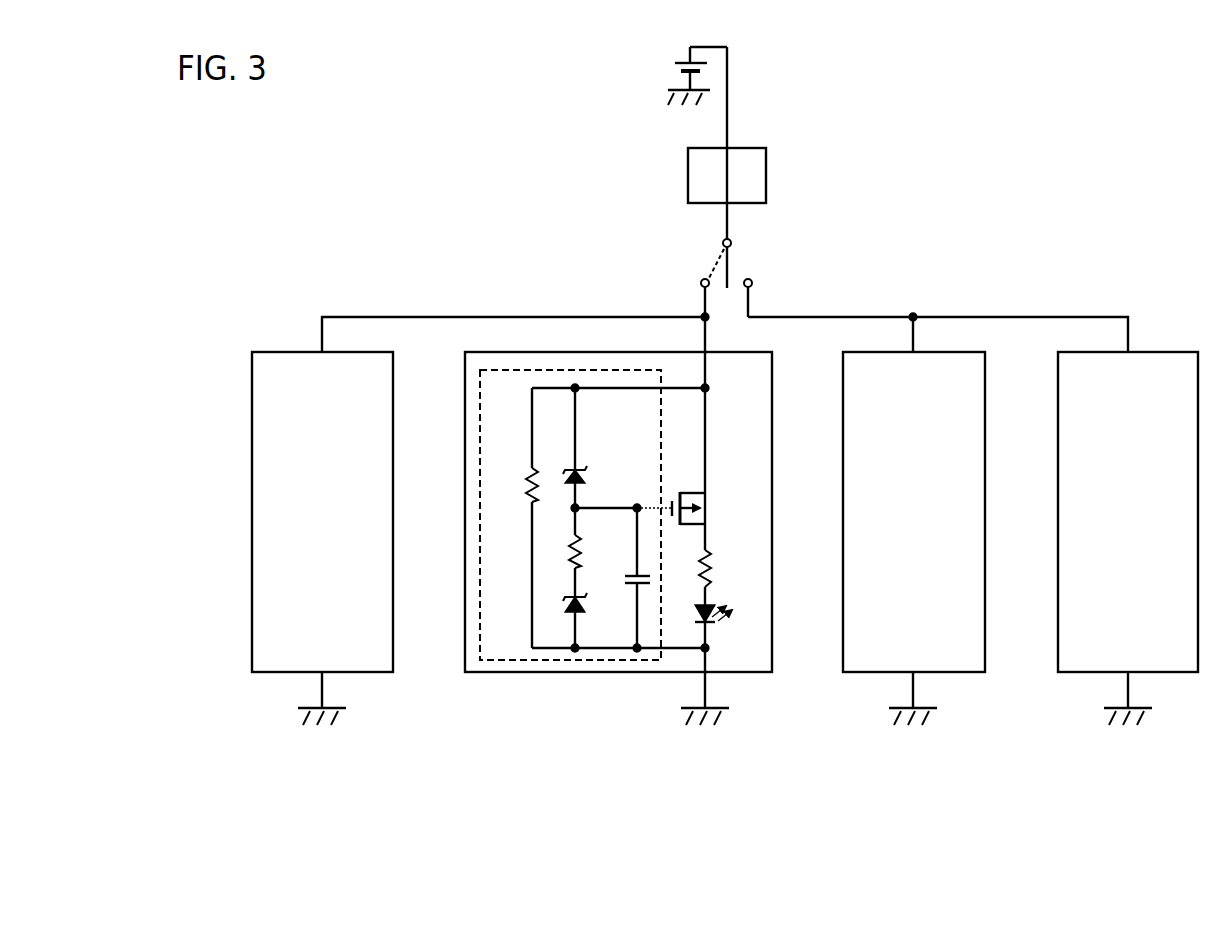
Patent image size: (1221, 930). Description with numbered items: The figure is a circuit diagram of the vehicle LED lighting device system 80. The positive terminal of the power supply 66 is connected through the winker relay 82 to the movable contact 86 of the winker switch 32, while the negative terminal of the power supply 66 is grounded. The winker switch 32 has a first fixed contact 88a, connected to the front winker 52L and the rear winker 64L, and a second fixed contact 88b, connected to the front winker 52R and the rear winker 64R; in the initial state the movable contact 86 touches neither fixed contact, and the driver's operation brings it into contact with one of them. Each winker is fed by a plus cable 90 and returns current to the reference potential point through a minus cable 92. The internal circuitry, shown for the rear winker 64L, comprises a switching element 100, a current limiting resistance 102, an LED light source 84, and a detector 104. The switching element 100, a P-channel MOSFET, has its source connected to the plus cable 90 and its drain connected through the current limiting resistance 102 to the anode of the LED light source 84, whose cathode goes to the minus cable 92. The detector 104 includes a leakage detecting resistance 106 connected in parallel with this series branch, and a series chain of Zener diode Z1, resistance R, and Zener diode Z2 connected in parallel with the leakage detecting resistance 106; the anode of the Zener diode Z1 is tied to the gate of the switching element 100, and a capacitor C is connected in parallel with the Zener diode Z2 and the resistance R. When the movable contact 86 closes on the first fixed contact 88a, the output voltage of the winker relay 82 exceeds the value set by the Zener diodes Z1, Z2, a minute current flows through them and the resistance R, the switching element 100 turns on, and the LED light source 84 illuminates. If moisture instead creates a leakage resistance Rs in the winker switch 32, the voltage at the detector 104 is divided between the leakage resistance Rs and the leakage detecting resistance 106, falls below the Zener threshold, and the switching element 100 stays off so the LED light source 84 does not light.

The vehicle LED lighting device system 80 is at (477, 126).
The power supply 66 is at (682, 61).
The winker relay 82 is at (767, 176).
The winker switch 32 is at (779, 256).
The movable contact 86 is at (731, 262).
The leakage resistance Rs is at (710, 262).
The first fixed contact 88a is at (700, 284).
The second fixed contact 88b is at (753, 284).
The plus cable 90 is at (325, 338).
The minus cable 92 is at (325, 692).
The front winker 52L is at (275, 672).
The rear winker 64L is at (485, 672).
The front winker 52R is at (866, 672).
The rear winker 64R is at (1082, 672).
The detector 104 is at (480, 488).
The leakage detecting resistance 106 is at (528, 495).
The Zener diode Z1 is at (586, 472).
The Zener diode Z2 is at (586, 599).
The resistance R is at (572, 562).
The capacitor C is at (633, 572).
The switching element 100 is at (714, 508).
The current limiting resistance 102 is at (712, 565).
The LED light source 84 is at (712, 609).